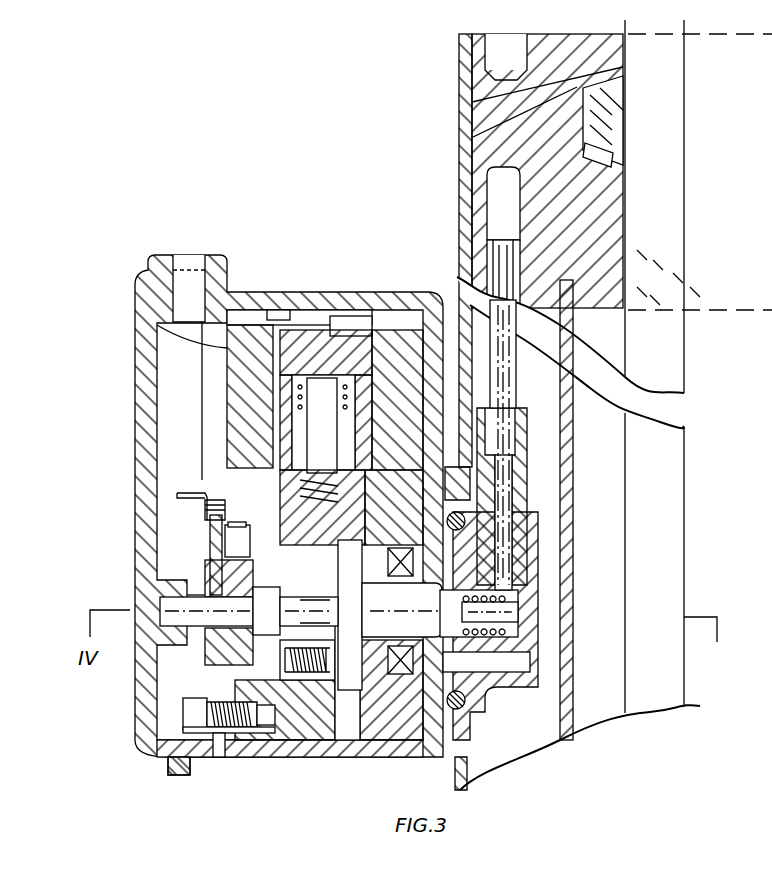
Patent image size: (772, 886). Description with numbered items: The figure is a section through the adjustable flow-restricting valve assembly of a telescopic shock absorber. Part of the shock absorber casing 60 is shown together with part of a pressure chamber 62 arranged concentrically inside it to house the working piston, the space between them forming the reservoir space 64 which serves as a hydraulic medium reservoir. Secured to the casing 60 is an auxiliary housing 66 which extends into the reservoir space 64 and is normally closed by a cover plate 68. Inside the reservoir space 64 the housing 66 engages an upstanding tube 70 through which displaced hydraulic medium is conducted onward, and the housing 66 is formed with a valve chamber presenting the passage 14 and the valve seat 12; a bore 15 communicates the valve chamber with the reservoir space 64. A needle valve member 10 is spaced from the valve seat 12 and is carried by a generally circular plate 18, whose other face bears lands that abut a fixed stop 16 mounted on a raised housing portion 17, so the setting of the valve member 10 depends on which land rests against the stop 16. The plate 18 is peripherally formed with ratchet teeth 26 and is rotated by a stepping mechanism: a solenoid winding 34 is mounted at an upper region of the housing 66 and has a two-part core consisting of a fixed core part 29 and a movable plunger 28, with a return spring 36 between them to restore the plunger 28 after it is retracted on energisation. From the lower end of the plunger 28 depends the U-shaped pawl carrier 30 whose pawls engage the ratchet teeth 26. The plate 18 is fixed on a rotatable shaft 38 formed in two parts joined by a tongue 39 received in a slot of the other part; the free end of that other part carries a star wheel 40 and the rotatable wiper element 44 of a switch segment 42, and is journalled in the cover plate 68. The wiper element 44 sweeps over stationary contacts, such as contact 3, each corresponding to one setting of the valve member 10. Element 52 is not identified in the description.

The stationary switch contact 3 is at (177, 495).
The needle valve member 10 is at (398, 650).
The valve seat 12 is at (460, 640).
The passage 14 is at (507, 640).
The bore 15 is at (525, 660).
The fixed stop 16 is at (232, 735).
The raised housing portion 17 is at (222, 745).
The circular plate 18 is at (348, 630).
The ratchet teeth 26 is at (314, 700).
The solenoid-operated plunger 28 is at (245, 418).
The fixed core part 29 is at (292, 340).
The pawl carrier 30 is at (402, 520).
The solenoid winding 34 is at (138, 288).
The return spring 36 is at (306, 488).
The rotatable shaft 38 is at (303, 678).
The tongue 39 is at (258, 700).
The star wheel 40 is at (235, 650).
The switch segment 42 is at (207, 564).
The rotatable wiper element 44 is at (207, 573).
The stop block 52 is at (235, 542).
The telescopic shock absorber casing 60 is at (459, 182).
The pressure chamber 62 is at (563, 413).
The reservoir space 64 is at (550, 453).
The auxiliary housing 66 is at (340, 310).
The cover plate 68 is at (140, 387).
The upstanding tube 70 is at (513, 500).